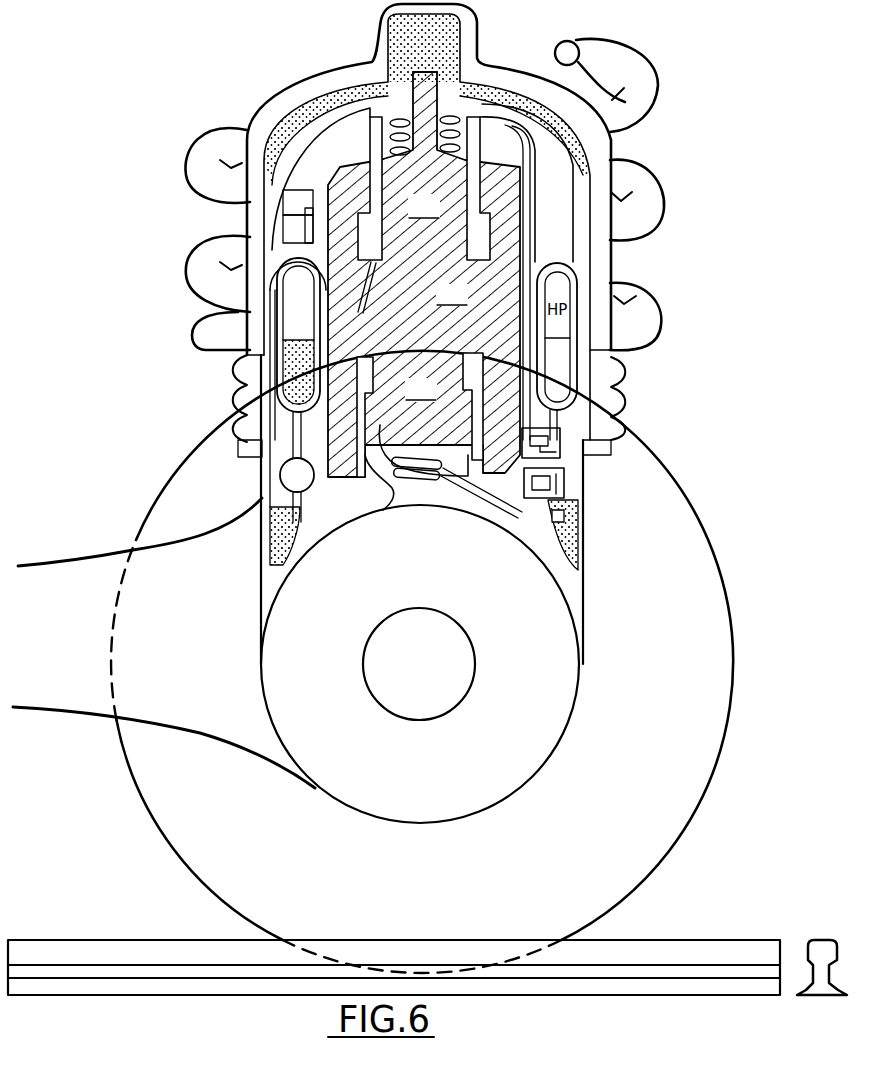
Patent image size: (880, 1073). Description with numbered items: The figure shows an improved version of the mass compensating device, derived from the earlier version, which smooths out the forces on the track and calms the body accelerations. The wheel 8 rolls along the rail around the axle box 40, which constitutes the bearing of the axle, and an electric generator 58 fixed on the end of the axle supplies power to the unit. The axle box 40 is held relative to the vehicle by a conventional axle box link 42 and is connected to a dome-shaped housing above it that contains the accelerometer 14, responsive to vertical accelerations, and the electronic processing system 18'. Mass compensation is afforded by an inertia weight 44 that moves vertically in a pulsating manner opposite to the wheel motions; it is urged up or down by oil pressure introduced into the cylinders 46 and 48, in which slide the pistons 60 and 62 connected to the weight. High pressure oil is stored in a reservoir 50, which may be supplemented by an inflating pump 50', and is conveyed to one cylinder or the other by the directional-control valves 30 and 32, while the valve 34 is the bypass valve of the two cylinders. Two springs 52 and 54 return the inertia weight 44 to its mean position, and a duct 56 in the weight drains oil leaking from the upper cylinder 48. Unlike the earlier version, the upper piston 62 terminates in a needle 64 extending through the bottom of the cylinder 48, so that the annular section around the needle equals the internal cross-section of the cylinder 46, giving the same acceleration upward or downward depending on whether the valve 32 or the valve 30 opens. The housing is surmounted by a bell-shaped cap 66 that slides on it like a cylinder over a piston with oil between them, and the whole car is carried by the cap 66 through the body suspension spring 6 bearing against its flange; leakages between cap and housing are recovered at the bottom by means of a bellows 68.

The spring of the body suspension 6 is at (640, 98).
The wheel 8 is at (688, 748).
The accelerometer 14 is at (300, 218).
The electronic processing system 18' is at (241, 205).
The directional-control valve 30 is at (555, 470).
The directional-control valve 32 is at (558, 490).
The bypass valve 34 is at (572, 523).
The axle box 40 is at (556, 666).
The axle box link 42 is at (82, 702).
The inertia weight 44 is at (424, 274).
The cylinder 46 is at (360, 470).
The cylinder 48 is at (382, 136).
The reservoir 50 is at (262, 335).
The inflating pump 50' is at (257, 467).
The spring 52 is at (414, 478).
The spring 54 is at (376, 132).
The duct 56 is at (356, 310).
The electric generator 58 is at (453, 662).
The piston 60 is at (420, 415).
The upper piston 62 is at (425, 146).
The needle 64 is at (462, 66).
The bell-shaped cap 66 is at (507, 82).
The bellows 68 is at (618, 398).